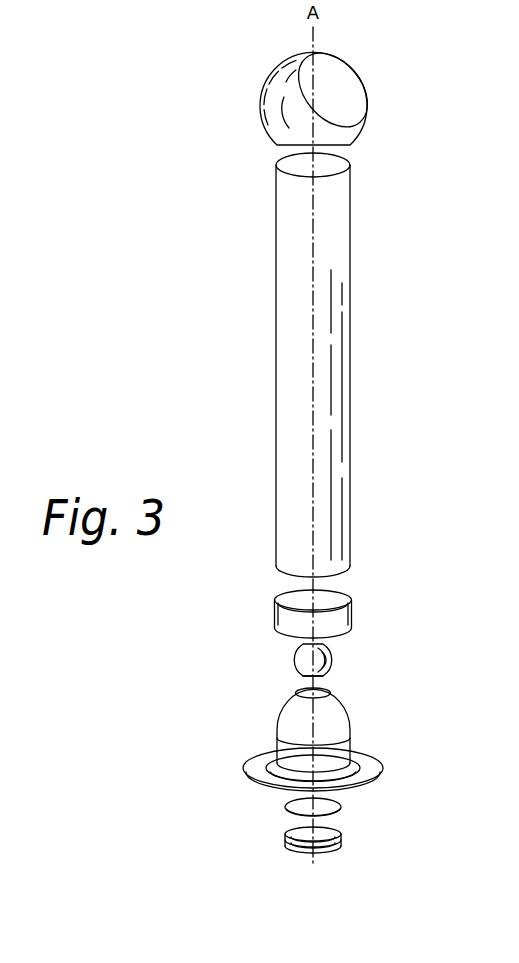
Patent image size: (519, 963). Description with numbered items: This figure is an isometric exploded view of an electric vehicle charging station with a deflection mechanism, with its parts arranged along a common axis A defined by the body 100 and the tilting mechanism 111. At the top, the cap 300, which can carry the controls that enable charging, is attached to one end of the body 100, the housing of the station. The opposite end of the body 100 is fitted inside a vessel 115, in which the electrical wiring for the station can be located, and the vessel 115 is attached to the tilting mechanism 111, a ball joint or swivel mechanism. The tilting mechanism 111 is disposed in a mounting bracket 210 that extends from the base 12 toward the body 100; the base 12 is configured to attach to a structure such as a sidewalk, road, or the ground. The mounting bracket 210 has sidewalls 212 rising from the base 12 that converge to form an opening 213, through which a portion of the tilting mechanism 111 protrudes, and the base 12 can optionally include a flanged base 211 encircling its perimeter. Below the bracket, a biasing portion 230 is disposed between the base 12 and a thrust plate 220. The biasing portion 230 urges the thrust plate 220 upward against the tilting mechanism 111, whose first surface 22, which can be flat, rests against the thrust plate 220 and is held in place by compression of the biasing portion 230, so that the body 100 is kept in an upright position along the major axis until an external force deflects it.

The cap 300 is at (367, 97).
The body 100 is at (350, 246).
The vessel 115 is at (342, 622).
The tilting mechanism 111 is at (277, 655).
The first surface 22 is at (318, 678).
The mounting bracket 210 is at (319, 763).
The opening 213 is at (308, 690).
The sidewalls 212 is at (287, 743).
The flanged base 211 is at (248, 779).
The base 12 is at (268, 784).
The thrust plate 220 is at (330, 807).
The biasing portion 230 is at (340, 842).